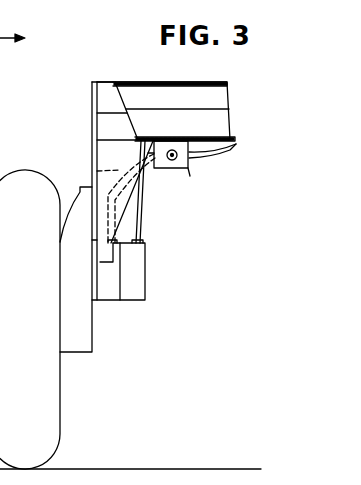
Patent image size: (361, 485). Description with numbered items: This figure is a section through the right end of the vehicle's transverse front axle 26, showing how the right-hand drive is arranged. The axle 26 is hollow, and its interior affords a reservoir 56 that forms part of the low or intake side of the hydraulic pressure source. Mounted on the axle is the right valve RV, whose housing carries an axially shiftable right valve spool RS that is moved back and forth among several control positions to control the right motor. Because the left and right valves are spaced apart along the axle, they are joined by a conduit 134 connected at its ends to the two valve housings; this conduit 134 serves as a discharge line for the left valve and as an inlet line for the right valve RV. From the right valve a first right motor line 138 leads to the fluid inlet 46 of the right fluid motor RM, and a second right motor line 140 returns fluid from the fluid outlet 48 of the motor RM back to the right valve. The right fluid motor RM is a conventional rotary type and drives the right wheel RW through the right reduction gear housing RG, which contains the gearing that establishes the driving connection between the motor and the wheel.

The transverse front axle 26 is at (198, 81).
The reservoir 56 is at (217, 98).
The right valve spool RS is at (173, 149).
The right valve RV is at (189, 168).
The conduit 134 is at (222, 152).
The second right motor line 140 is at (112, 172).
The first right motor line 138 is at (140, 217).
The fluid inlet 46 is at (143, 242).
The fluid outlet 48 is at (95, 240).
The right fluid motor RM is at (140, 288).
The right reduction gear housing RG is at (82, 338).
The right wheel RW is at (24, 178).